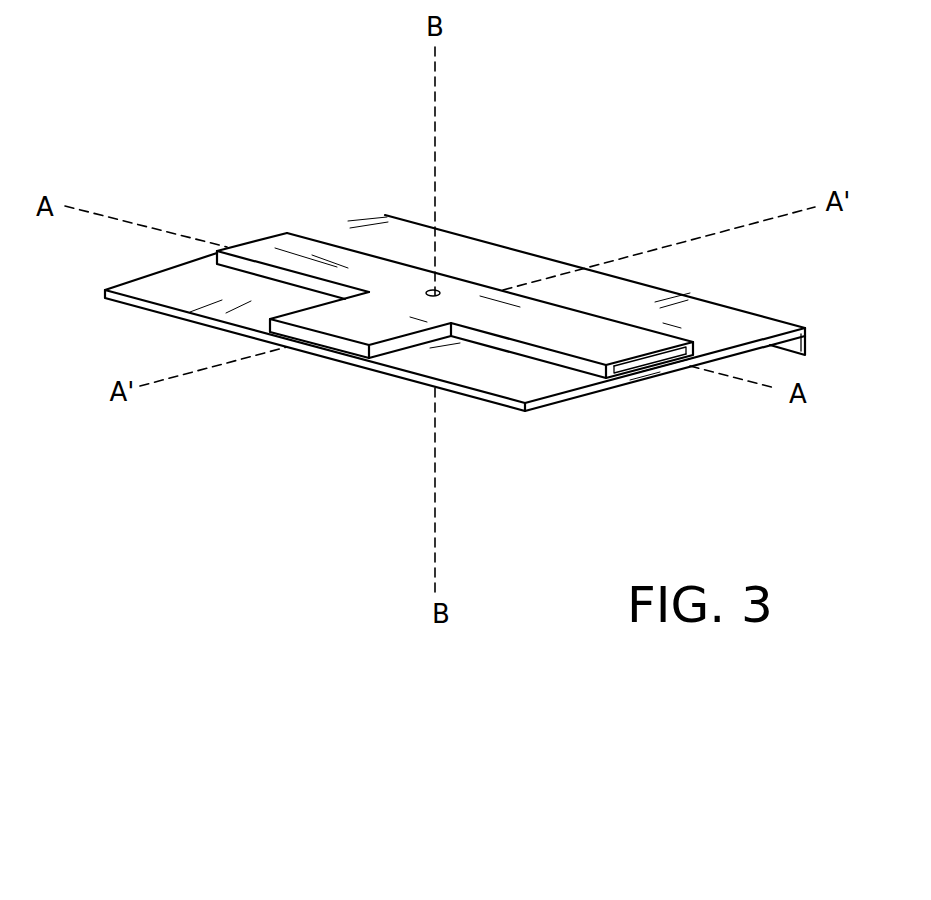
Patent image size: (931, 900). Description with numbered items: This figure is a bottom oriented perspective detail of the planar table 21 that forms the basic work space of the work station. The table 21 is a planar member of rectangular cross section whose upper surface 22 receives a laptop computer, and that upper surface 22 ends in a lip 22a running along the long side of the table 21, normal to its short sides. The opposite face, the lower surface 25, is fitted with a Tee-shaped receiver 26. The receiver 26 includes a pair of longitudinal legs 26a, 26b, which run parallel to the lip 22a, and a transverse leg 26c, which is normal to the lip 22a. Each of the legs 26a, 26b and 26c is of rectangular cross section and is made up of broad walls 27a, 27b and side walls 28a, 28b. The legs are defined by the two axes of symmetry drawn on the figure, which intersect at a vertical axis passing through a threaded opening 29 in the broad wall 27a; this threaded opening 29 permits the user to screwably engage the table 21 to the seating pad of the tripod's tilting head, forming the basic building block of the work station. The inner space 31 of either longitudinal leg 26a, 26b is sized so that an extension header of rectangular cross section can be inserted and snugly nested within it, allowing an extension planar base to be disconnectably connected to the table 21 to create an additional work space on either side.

The planar table 21 is at (692, 288).
The upper surface 22 is at (663, 377).
The lip 22a is at (808, 343).
The lower surface 25 is at (458, 264).
The Tee-shaped receiver 26 is at (533, 313).
The longitudinal leg 26a is at (600, 323).
The longitudinal leg 26b is at (286, 240).
The transverse leg 26c is at (345, 318).
The broad wall 27a is at (483, 312).
The broad wall 27b is at (530, 342).
The side wall 28a is at (690, 340).
The side wall 28b is at (605, 378).
The threaded opening 29 is at (428, 292).
The inner space 31 is at (647, 370).